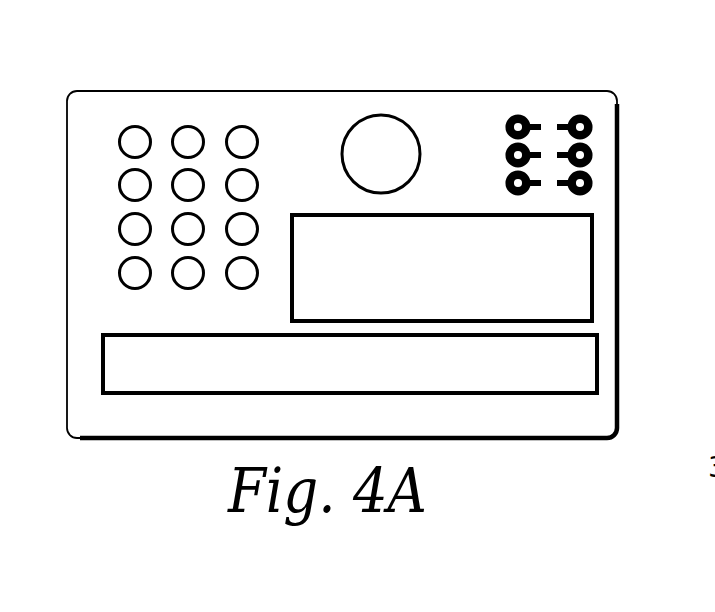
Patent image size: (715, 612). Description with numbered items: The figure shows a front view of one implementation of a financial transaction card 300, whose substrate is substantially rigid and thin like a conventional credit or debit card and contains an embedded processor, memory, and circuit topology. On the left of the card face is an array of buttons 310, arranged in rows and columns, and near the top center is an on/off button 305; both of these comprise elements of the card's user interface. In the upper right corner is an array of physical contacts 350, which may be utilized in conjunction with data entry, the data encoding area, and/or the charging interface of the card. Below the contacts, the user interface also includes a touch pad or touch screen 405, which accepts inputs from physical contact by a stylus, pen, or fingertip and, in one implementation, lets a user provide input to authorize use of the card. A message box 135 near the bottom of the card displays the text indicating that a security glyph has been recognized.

The financial transaction card 300 is at (522, 91).
The on/off button 305 is at (382, 115).
The array of buttons 310 is at (100, 113).
The array of physical contacts 350 is at (590, 117).
The touch pad or touch screen 405 is at (592, 241).
The security glyph recognized message box 135 is at (392, 393).